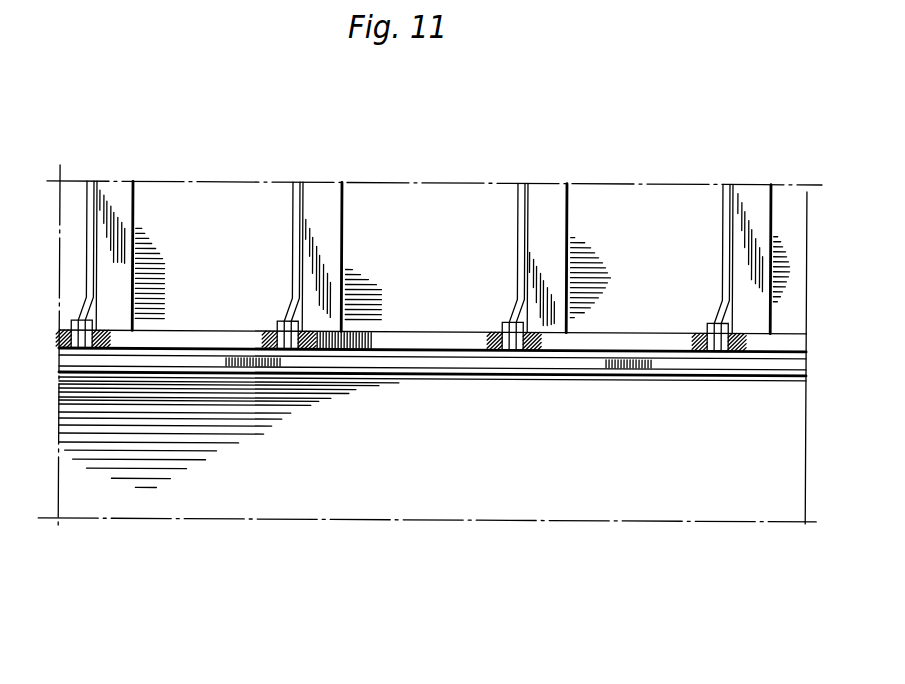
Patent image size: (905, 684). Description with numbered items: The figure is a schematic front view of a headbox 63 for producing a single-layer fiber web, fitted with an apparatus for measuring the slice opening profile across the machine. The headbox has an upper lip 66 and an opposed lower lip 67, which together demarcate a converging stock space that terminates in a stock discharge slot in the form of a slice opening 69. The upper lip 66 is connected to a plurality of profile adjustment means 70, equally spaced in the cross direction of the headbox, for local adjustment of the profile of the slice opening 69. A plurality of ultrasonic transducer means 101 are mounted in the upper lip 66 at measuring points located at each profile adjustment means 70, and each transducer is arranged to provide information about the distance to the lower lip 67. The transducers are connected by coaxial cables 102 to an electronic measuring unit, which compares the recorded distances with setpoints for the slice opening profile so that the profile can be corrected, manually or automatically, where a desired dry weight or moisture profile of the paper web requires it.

The headbox 63 is at (725, 500).
The upper lip 66 is at (800, 344).
The lower lip 67 is at (803, 354).
The slice opening 69 is at (803, 366).
The profile adjustment means 70 is at (117, 193).
The ultrasonic transducer means 101 is at (74, 328).
The coaxial cables 102 is at (87, 198).